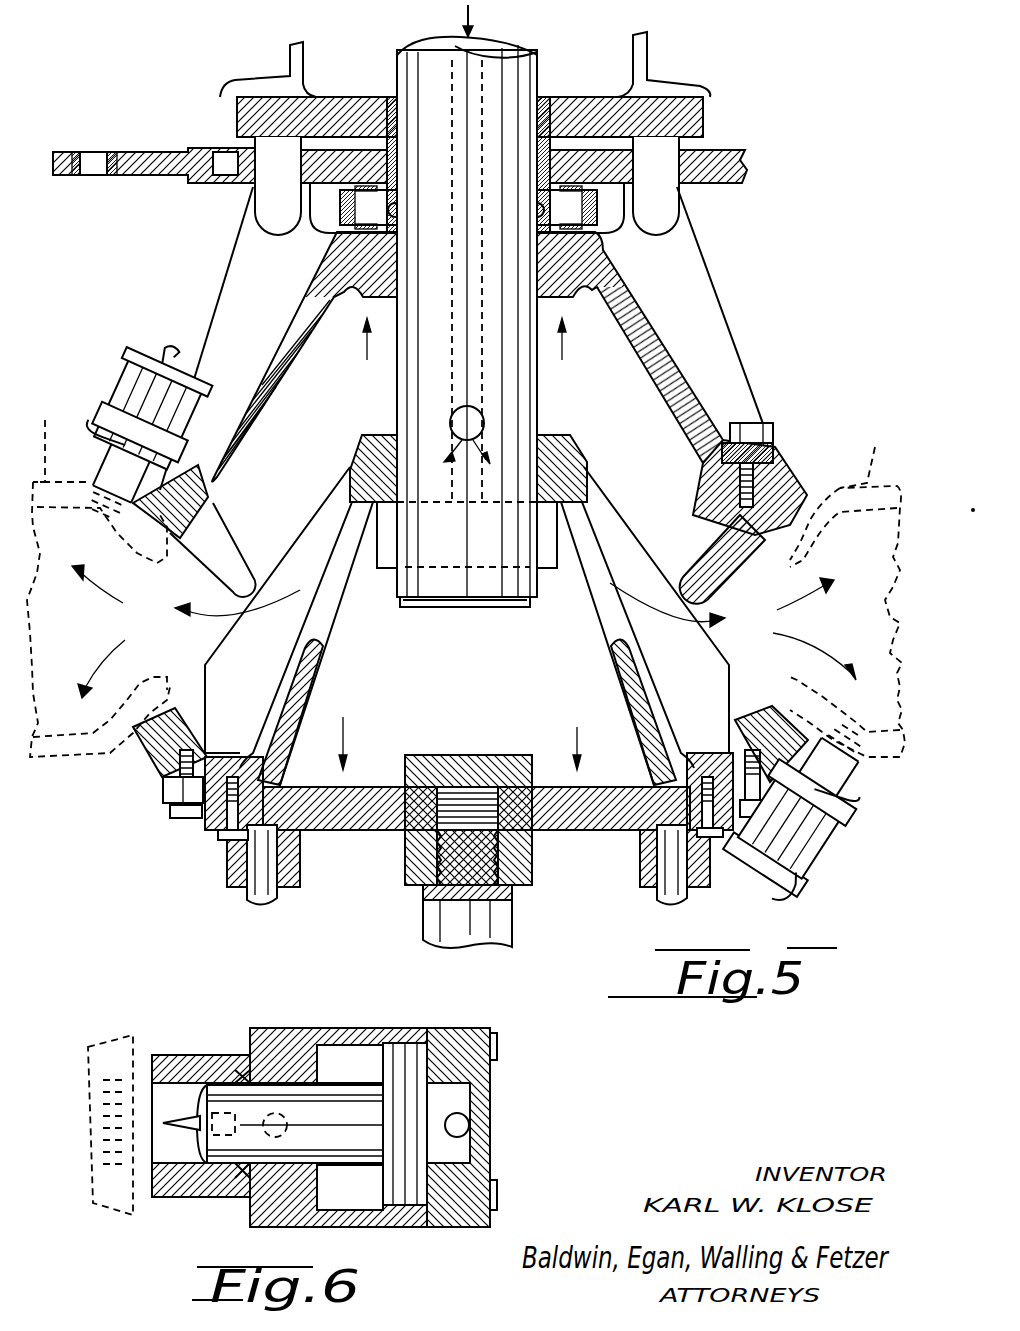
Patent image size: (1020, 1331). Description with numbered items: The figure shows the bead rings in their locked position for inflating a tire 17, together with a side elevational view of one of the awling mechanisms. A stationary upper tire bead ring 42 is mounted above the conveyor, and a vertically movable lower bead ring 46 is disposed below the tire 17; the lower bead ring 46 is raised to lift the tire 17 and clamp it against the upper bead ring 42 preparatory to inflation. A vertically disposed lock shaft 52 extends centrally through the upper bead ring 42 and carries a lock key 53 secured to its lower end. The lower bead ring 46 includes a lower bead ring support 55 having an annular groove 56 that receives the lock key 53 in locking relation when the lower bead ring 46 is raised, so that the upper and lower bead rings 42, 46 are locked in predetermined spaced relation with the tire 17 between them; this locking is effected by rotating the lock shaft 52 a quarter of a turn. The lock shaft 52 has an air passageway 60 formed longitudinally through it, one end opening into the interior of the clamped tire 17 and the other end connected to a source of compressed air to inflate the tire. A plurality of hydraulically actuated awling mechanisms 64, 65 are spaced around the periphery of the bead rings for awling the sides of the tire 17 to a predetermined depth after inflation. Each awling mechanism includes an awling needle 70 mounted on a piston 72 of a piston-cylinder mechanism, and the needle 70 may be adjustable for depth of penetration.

In FIG. 5, the tire 17 is at (466, 577).
In FIG. 6, the tire 17 is at (110, 1099).
In FIG. 5, the upper tire bead ring 42 is at (797, 487).
In FIG. 5, the lower bead ring 46 is at (137, 727).
In FIG. 5, the lock shaft 52 is at (540, 375).
In FIG. 5, the lock key 53 is at (550, 575).
In FIG. 5, the lower bead ring support 55 is at (277, 697).
In FIG. 5, the annular groove 56 is at (570, 512).
In FIG. 5, the air passageway 60 is at (455, 373).
In FIG. 5, the awling mechanism 64 is at (128, 353).
In FIG. 5, the awling mechanism 65 is at (820, 873).
In FIG. 6, the awling mechanism 65 is at (455, 1028).
In FIG. 6, the awling needle 70 is at (180, 1115).
In FIG. 6, the piston 72 is at (348, 1080).